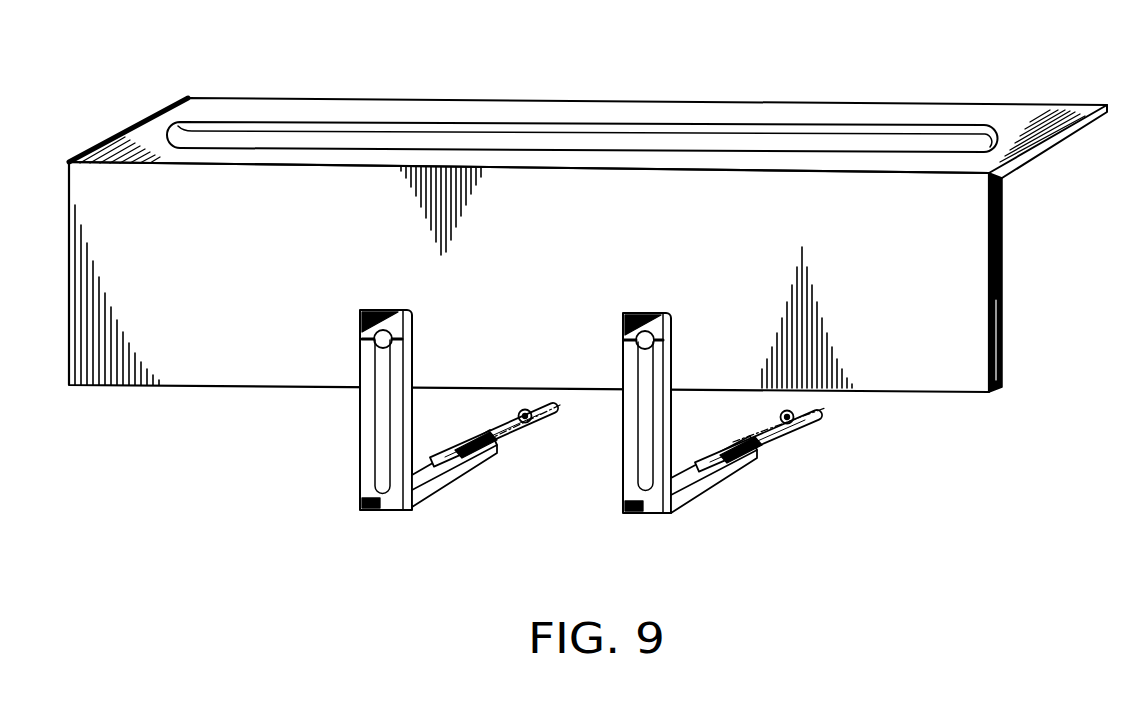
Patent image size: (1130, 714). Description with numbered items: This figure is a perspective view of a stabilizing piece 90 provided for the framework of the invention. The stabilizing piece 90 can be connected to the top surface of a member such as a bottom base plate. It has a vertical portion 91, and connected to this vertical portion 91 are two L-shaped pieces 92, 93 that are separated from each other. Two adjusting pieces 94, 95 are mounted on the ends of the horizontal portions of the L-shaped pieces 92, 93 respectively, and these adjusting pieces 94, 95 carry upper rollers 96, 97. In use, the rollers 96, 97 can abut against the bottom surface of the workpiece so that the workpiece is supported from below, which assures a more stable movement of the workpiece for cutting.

The stabilizing piece 90 is at (637, 112).
The vertical portion 91 is at (935, 367).
The L-shaped piece 92 is at (370, 461).
The L-shaped piece 93 is at (627, 472).
The adjusting piece 94 is at (500, 448).
The adjusting piece 95 is at (775, 440).
The upper roller 96 is at (540, 423).
The upper roller 97 is at (803, 423).